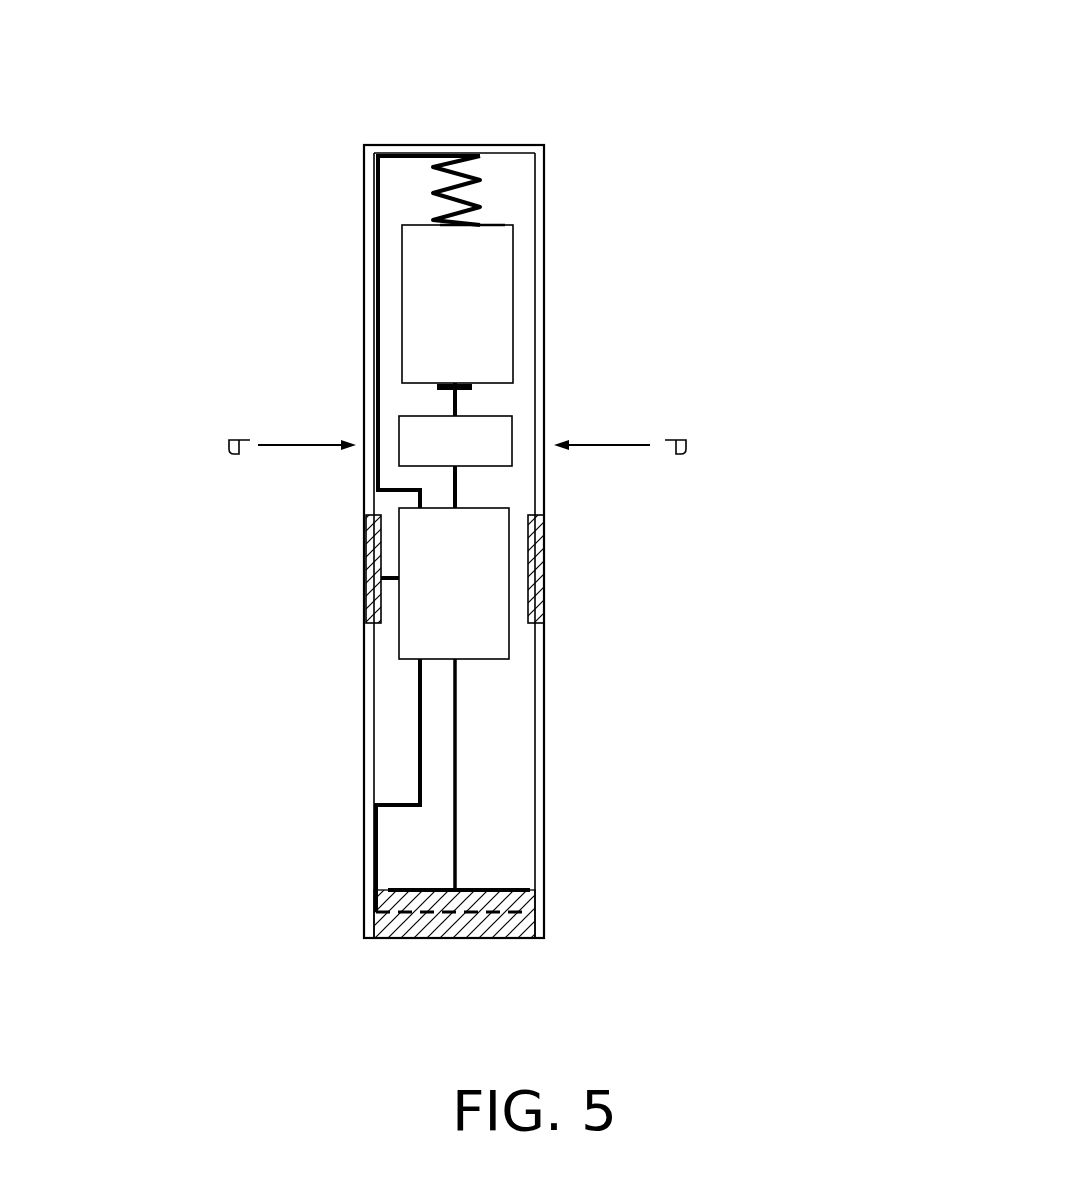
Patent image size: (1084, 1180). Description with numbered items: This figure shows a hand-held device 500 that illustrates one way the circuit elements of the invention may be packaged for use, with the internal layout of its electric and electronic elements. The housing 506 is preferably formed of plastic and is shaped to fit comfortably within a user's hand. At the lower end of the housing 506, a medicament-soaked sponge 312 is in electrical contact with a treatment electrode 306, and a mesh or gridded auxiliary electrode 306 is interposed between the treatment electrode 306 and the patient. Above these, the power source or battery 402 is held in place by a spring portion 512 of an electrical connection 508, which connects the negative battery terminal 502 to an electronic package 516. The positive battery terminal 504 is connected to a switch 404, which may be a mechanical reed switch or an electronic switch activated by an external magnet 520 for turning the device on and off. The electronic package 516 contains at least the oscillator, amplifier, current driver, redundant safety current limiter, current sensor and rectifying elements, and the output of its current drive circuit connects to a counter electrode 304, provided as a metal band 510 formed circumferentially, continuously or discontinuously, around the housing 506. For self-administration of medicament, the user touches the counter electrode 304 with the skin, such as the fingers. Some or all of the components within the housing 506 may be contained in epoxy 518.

The hand-held device 500 is at (613, 155).
The spring portion 512 is at (433, 193).
The power source (battery) 402 is at (478, 300).
The negative battery terminal 502 is at (480, 225).
The electrical connection 508 is at (378, 395).
The positive battery terminal 504 is at (467, 388).
The switch 404 is at (478, 455).
The external magnet 520 is at (559, 467).
The electronic package 516 is at (478, 600).
The counter electrode 304 is at (395, 576).
The metal band 510 is at (545, 588).
The epoxy 518 is at (503, 760).
The housing 506 is at (538, 827).
The treatment electrode 306 is at (287, 898).
The medicament-soaked sponge 312 is at (503, 938).